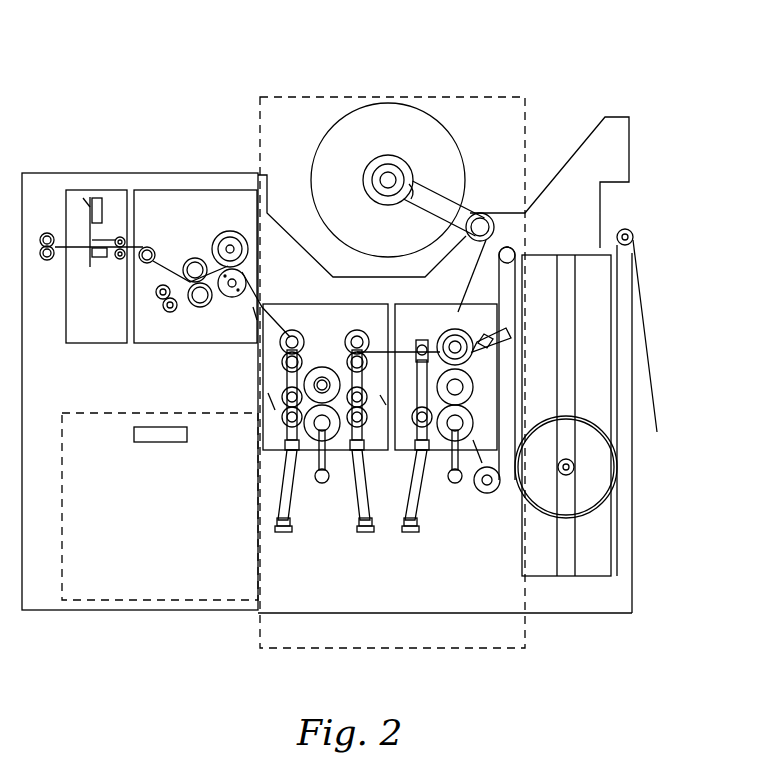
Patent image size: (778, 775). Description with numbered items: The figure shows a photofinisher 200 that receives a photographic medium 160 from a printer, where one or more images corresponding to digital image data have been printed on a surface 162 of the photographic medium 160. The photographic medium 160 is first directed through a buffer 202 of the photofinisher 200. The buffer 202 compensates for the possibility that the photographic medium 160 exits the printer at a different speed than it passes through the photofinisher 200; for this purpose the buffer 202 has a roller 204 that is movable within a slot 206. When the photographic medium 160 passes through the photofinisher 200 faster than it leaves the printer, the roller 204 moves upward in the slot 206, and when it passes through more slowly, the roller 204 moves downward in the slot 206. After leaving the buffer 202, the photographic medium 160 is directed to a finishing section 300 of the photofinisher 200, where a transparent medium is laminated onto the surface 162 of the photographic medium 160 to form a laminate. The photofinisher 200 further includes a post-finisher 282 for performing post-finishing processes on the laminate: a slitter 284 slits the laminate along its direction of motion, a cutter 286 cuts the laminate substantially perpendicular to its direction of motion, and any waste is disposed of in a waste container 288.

The photofinisher 200 is at (590, 78).
The finishing section 300 is at (445, 96).
The post-finisher 282 is at (144, 392).
The slitter 284 is at (204, 223).
The cutter 286 is at (107, 312).
The waste container 288 is at (143, 504).
The buffer 202 is at (587, 577).
The roller 204 is at (595, 470).
The slot 206 is at (567, 543).
The surface 162 is at (644, 322).
The photographic medium 160 is at (668, 404).